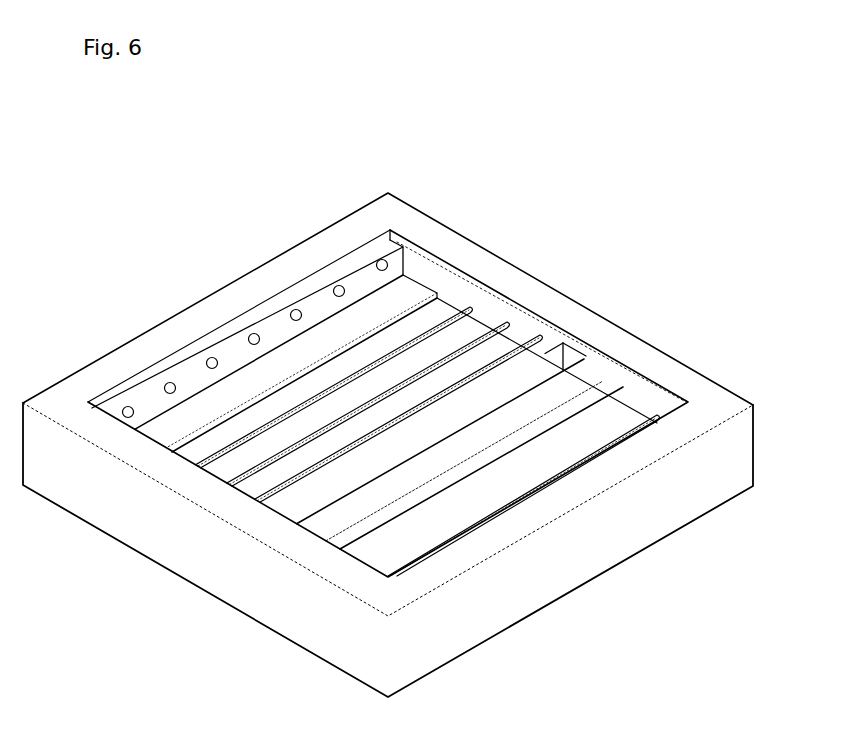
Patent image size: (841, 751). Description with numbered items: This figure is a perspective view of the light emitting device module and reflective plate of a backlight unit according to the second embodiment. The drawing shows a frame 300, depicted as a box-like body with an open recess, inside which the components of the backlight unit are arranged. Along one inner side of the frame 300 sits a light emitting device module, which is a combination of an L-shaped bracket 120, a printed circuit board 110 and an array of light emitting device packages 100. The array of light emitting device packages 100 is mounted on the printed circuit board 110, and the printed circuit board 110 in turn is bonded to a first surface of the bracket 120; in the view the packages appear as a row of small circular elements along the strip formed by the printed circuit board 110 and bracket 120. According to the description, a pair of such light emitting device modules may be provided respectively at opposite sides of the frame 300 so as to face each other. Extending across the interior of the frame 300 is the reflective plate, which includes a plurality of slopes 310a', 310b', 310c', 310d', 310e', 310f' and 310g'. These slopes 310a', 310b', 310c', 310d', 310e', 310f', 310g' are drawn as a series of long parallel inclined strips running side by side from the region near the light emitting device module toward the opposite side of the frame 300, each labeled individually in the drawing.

The frame 300 is at (323, 246).
The light emitting device packages 100 is at (297, 312).
The printed circuit board 110 is at (233, 347).
The bracket 120 is at (204, 407).
The slope 310a' is at (369, 318).
The slope 310b' is at (398, 352).
The slope 310c' is at (436, 351).
The slope 310d' is at (468, 387).
The slope 310e' is at (510, 389).
The slope 310f' is at (524, 424).
The slope 310g' is at (568, 451).